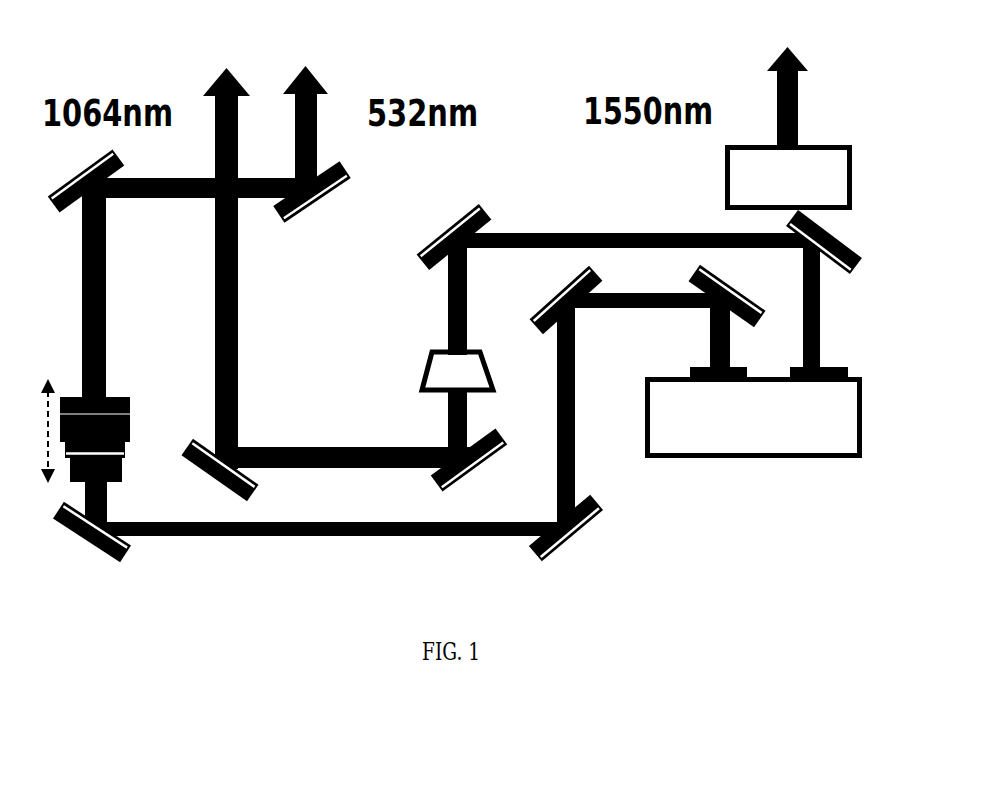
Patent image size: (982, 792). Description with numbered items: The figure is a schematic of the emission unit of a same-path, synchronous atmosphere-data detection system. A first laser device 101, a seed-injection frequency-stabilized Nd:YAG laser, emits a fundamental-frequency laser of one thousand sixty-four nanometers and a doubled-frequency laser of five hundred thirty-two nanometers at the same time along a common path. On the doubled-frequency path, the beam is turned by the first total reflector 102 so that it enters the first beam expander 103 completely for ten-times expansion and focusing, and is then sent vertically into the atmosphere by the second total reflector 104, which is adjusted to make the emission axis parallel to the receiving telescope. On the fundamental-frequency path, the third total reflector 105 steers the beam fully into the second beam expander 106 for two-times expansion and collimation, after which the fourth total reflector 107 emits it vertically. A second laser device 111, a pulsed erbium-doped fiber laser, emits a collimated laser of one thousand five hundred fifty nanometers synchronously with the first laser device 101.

The first laser device 101 is at (765, 442).
The first total reflector 102 is at (653, 528).
The first beam expander 103 is at (120, 395).
The second total reflector 104 is at (105, 202).
The third total reflector 105 is at (447, 237).
The second beam expander 106 is at (445, 375).
The fourth total reflector 107 is at (240, 447).
The second laser device 111 is at (803, 157).